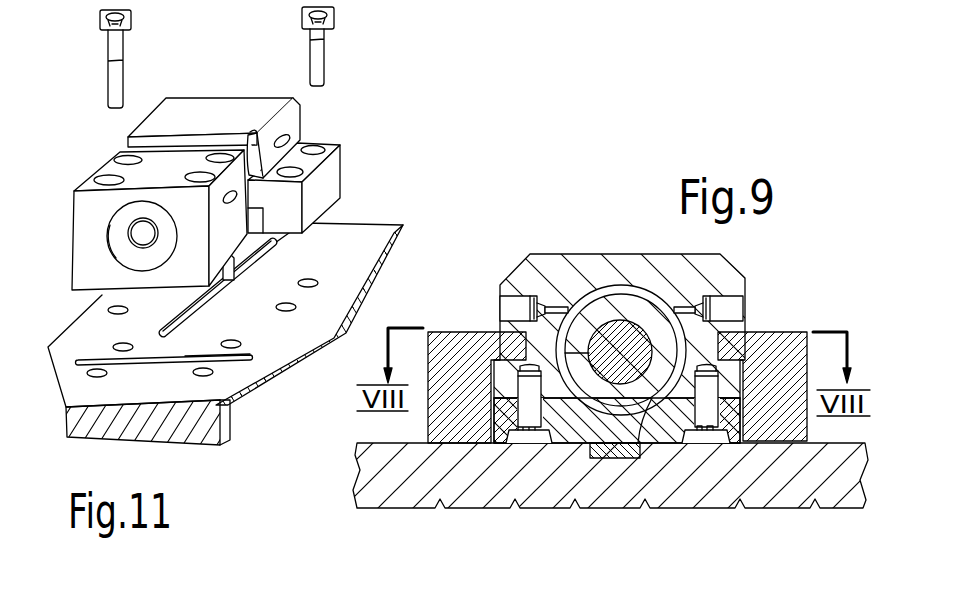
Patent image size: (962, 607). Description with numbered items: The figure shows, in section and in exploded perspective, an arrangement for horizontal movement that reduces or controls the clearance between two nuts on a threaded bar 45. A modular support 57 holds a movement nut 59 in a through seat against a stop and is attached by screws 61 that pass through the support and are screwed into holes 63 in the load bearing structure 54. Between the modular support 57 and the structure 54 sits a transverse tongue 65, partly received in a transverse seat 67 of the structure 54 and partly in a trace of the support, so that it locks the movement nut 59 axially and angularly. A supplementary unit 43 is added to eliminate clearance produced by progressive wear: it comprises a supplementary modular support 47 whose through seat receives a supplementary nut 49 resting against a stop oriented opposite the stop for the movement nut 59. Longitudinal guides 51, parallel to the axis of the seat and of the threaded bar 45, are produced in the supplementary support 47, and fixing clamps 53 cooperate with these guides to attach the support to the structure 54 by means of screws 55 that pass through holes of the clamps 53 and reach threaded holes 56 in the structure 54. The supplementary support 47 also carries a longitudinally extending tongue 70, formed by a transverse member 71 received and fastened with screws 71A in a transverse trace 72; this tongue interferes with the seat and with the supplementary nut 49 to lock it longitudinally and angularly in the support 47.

In FIG. 11, the supplementary unit 43 is at (303, 120).
In FIG. 9, the supplementary unit 43 is at (487, 316).
In FIG. 9, the threaded bar 45 is at (623, 318).
In FIG. 11, the supplementary modular support 47 is at (192, 92).
In FIG. 9, the supplementary modular support 47 is at (556, 242).
In FIG. 9, the supplementary nut 49 is at (655, 306).
In FIG. 11, the longitudinal guides 51 is at (250, 130).
In FIG. 9, the longitudinal guides 51 is at (762, 332).
In FIG. 11, the fixing clamps 53 is at (330, 175).
In FIG. 9, the fixing clamps 53 is at (427, 428).
In FIG. 11, the load bearing structure 54 is at (200, 440).
In FIG. 9, the load bearing structure 54 is at (407, 495).
In FIG. 11, the screws 55 is at (318, 67).
In FIG. 11, the threaded holes 56 is at (309, 315).
In FIG. 11, the modular support 57 is at (90, 217).
In FIG. 11, the movement nut 59 is at (124, 248).
In FIG. 11, the screws 61 is at (119, 74).
In FIG. 11, the holes 63 is at (88, 363).
In FIG. 11, the transverse tongue 65 is at (235, 266).
In FIG. 11, the transverse seat 67 is at (192, 353).
In FIG. 11, the tongue 70 is at (188, 313).
In FIG. 9, the tongue 70 is at (615, 462).
In FIG. 9, the transverse member 71 is at (563, 447).
In FIG. 9, the transverse trace 72 is at (650, 448).
In FIG. 9, the screws 71A is at (703, 447).